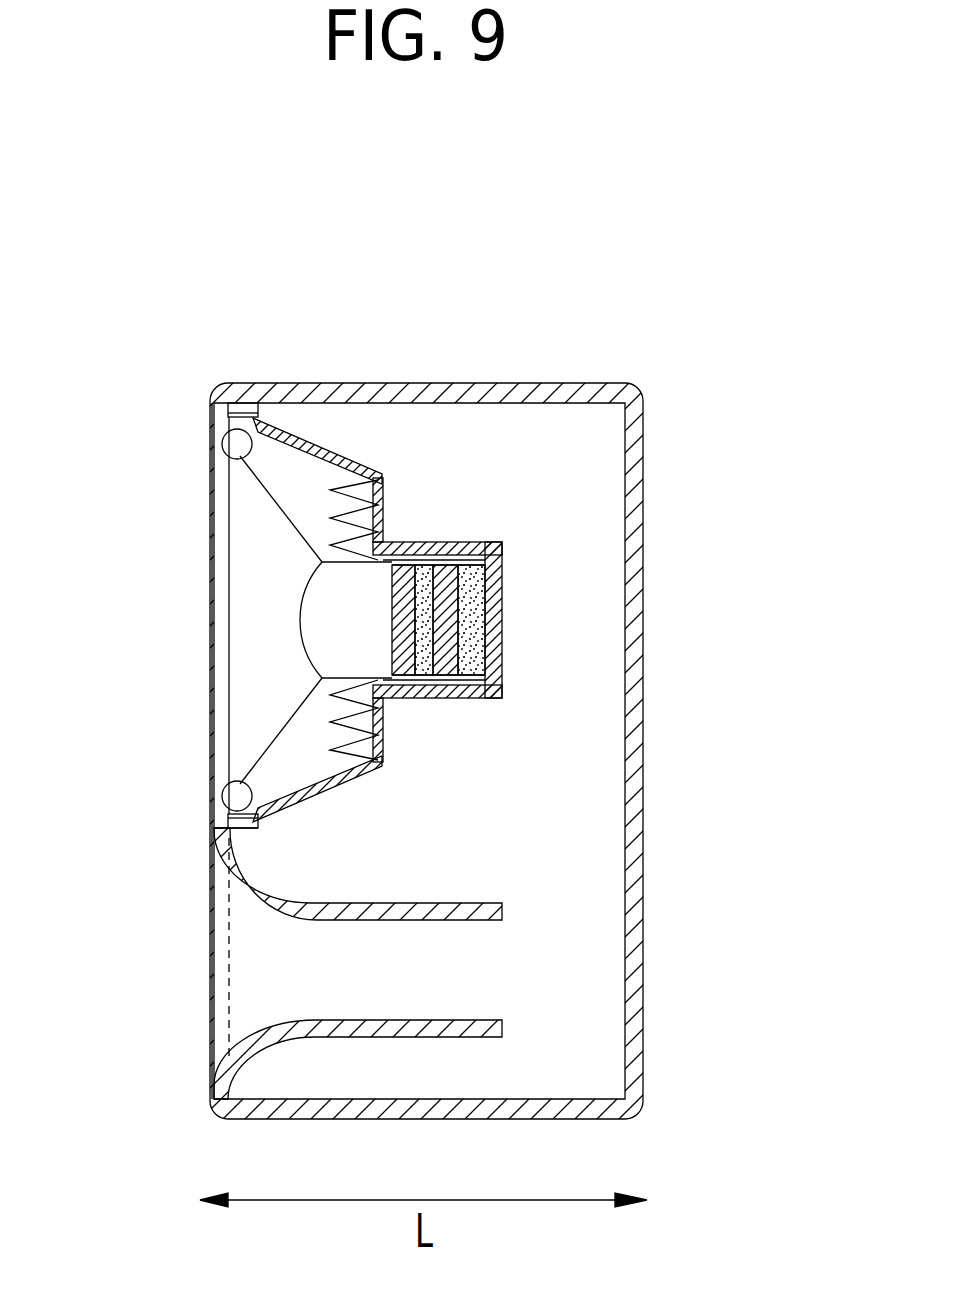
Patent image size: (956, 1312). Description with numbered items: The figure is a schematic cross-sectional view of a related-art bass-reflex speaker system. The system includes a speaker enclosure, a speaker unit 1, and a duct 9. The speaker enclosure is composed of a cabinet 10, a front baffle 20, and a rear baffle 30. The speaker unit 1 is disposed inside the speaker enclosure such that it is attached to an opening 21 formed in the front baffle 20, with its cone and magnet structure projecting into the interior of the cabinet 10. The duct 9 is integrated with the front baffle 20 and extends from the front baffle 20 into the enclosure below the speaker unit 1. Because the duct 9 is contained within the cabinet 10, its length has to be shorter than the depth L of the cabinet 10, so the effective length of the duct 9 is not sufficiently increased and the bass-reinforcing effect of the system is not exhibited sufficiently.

The cabinet 10 is at (362, 386).
The speaker unit 1 is at (300, 601).
The opening 21 is at (223, 763).
The duct 9 is at (440, 905).
The front baffle 20 is at (212, 1098).
The rear baffle 30 is at (645, 1090).